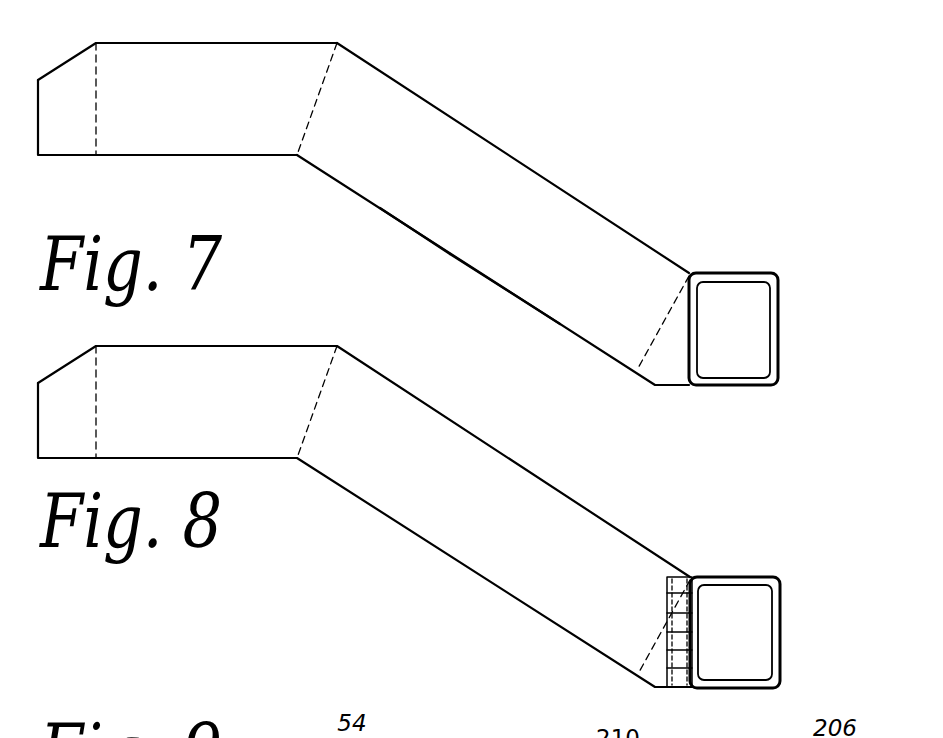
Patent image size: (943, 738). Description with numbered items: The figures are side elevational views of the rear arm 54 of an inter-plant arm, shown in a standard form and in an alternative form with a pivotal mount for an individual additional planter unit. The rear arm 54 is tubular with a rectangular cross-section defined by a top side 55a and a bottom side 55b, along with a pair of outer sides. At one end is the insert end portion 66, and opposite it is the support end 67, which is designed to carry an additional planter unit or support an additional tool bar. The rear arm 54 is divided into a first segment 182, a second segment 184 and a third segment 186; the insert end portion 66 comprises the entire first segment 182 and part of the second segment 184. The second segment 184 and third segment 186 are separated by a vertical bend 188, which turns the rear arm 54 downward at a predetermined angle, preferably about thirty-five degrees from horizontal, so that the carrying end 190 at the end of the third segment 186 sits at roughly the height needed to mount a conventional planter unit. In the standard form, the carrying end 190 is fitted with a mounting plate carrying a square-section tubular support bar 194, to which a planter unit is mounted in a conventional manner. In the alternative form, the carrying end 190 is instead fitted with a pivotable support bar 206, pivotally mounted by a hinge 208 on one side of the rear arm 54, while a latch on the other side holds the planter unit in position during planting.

In FIG. 7, the rear arm 54 is at (438, 106).
In FIG. 8, the rear arm 54 is at (413, 537).
In FIG. 7, the top side 55a is at (257, 43).
In FIG. 7, the bottom side 55b is at (478, 275).
In FIG. 7, the insert end portion 66 is at (190, 68).
In FIG. 7, the support end 67 is at (689, 273).
In FIG. 7, the first segment 182 is at (72, 130).
In FIG. 7, the second segment 184 is at (197, 135).
In FIG. 7, the third segment 186 is at (407, 197).
In FIG. 7, the vertical bend 188 is at (310, 118).
In FIG. 7, the carrying end 190 is at (690, 343).
In FIG. 8, the carrying end 190 is at (690, 577).
In FIG. 7, the tubular support bar 194 is at (730, 273).
In FIG. 8, the pivotable support bar 206 is at (782, 600).
In FIG. 8, the hinge 208 is at (675, 662).